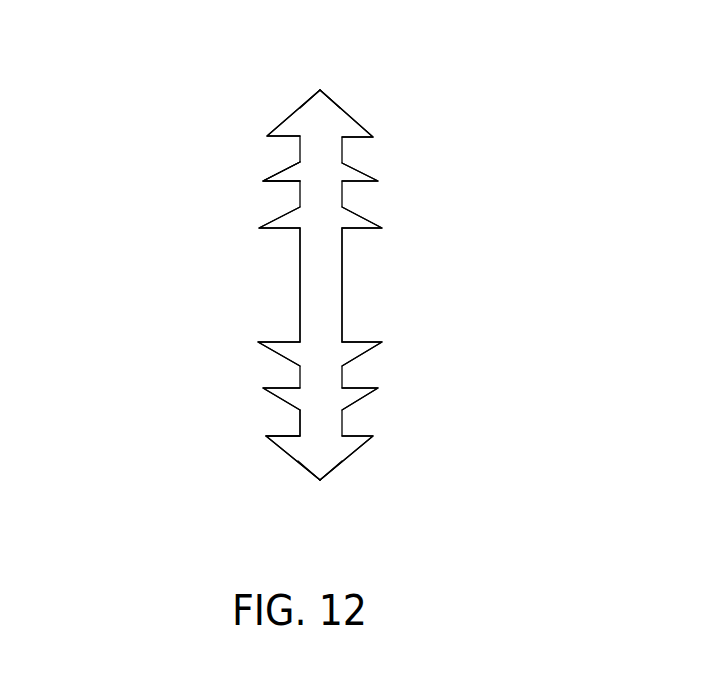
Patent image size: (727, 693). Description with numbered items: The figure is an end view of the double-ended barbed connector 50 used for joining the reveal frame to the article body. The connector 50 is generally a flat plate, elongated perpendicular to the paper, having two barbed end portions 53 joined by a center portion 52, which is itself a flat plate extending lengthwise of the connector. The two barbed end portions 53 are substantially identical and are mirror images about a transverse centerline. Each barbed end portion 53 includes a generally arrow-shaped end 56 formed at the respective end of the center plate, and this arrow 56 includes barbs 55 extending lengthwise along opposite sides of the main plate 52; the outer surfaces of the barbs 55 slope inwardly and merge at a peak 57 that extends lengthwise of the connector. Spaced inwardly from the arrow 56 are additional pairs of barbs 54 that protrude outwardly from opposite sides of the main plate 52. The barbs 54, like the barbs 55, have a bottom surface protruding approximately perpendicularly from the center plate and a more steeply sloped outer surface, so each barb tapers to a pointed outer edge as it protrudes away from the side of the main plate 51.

The double-ended barbed connector 50 is at (430, 316).
The main plate 51 is at (292, 275).
The center portion 52 is at (329, 289).
The barbed end portion 53 is at (265, 181).
The barb 54 is at (280, 173).
The barb 55 is at (297, 120).
The arrow-shaped end 56 is at (313, 108).
The peak 57 is at (322, 88).